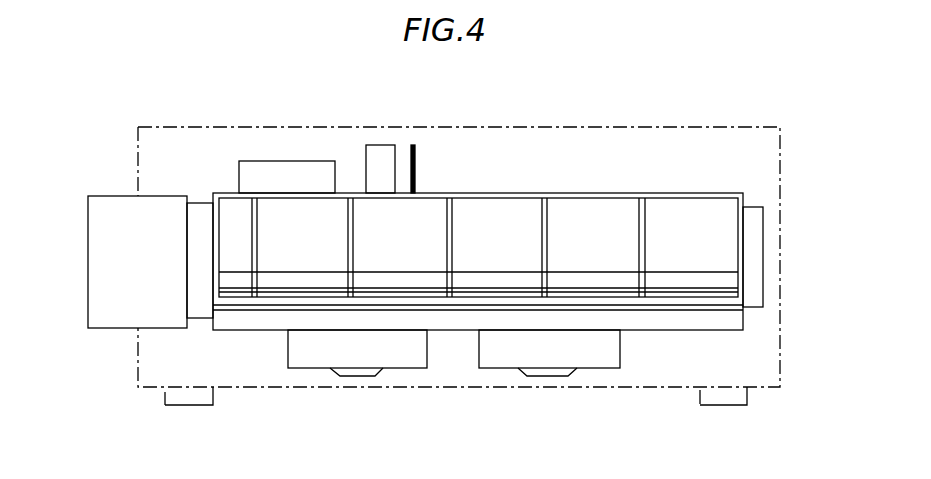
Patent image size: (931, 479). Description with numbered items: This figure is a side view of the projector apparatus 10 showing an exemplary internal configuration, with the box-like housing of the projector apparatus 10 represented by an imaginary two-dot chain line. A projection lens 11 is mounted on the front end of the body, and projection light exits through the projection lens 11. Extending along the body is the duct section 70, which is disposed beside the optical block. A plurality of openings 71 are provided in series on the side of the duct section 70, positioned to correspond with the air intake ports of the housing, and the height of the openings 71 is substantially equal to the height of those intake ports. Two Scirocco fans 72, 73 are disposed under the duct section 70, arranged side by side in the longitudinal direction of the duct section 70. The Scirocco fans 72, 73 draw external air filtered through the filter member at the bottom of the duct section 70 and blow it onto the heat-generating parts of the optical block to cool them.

The projector apparatus 10 is at (766, 388).
The projection lens 11 is at (88, 305).
The duct section 70 is at (725, 192).
The openings 71 is at (601, 225).
The Scirocco fan 72 is at (601, 360).
The Scirocco fan 73 is at (401, 358).